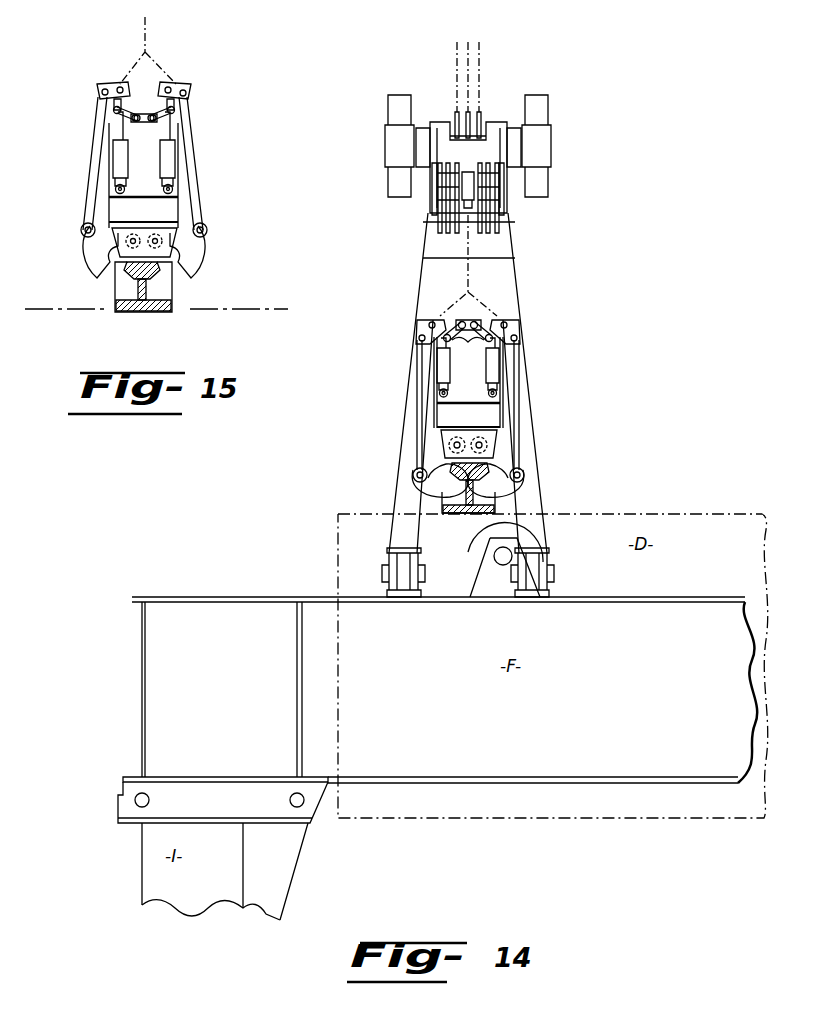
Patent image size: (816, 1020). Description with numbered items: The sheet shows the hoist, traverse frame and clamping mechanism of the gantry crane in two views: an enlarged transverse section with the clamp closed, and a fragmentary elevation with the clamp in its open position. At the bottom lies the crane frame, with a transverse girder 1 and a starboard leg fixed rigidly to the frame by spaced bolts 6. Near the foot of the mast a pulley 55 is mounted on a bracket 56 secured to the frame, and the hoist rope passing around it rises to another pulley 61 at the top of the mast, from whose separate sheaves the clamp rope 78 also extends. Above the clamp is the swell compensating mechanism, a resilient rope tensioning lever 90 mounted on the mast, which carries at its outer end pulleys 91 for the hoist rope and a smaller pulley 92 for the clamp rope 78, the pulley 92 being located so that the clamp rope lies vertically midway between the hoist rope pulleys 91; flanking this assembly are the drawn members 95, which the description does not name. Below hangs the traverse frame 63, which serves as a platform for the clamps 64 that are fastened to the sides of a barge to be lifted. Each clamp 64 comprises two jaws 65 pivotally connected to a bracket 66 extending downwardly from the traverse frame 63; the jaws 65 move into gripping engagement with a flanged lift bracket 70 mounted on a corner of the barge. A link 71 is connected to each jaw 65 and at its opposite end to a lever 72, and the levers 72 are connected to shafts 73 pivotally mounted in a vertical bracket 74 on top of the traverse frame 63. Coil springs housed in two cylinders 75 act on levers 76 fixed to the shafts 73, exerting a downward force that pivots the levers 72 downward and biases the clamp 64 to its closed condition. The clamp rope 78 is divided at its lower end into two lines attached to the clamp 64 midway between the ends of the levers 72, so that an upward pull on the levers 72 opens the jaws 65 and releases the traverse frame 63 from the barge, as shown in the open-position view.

In FIG. 14, the transverse girder 1 is at (614, 786).
In FIG. 14, the spaced bolts 6 is at (134, 800).
In FIG. 14, the pulley 55 is at (470, 550).
In FIG. 14, the bracket 56 is at (472, 582).
In FIG. 14, the pulley 61 is at (482, 112).
In FIG. 15, the traverse frame 63 is at (170, 210).
In FIG. 14, the traverse frame 63 is at (448, 414).
In FIG. 15, the clamp 64 is at (230, 258).
In FIG. 14, the clamp 64 is at (513, 453).
In FIG. 15, the jaws 65 is at (84, 258).
In FIG. 14, the jaws 65 is at (430, 472).
In FIG. 15, the bracket 66 is at (178, 246).
In FIG. 14, the bracket 66 is at (440, 448).
In FIG. 15, the flanged lift bracket 70 is at (146, 292).
In FIG. 14, the flanged lift bracket 70 is at (478, 504).
In FIG. 15, the link 71 is at (88, 190).
In FIG. 14, the link 71 is at (418, 388).
In FIG. 15, the lever 72 is at (104, 80).
In FIG. 14, the lever 72 is at (450, 312).
In FIG. 15, the shaft 73 is at (144, 121).
In FIG. 14, the shaft 73 is at (468, 317).
In FIG. 15, the vertical bracket 74 is at (182, 176).
In FIG. 14, the vertical bracket 74 is at (480, 376).
In FIG. 15, the cylinder 75 is at (112, 164).
In FIG. 14, the cylinder 75 is at (437, 362).
In FIG. 15, the lever 76 is at (116, 116).
In FIG. 14, the lever 76 is at (468, 342).
In FIG. 15, the clamp rope 78 is at (148, 33).
In FIG. 14, the clamp rope 78 is at (486, 248).
In FIG. 14, the lever 90 is at (500, 146).
In FIG. 14, the pulleys 91 is at (500, 184).
In FIG. 14, the pulley 92 is at (468, 212).
In FIG. 14, the guide rollers 95 is at (388, 100).